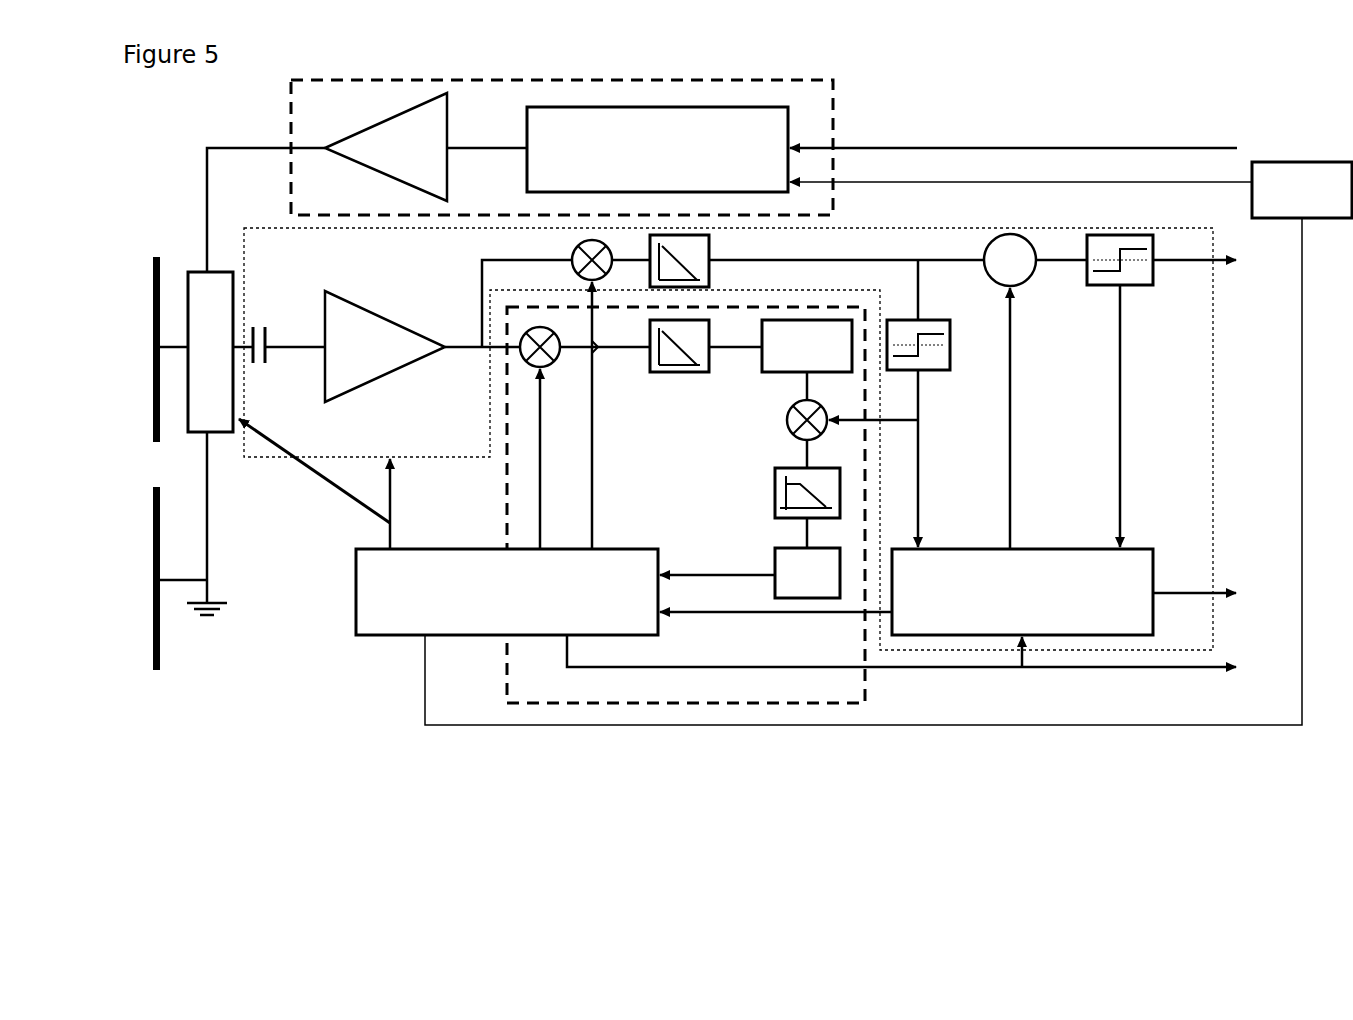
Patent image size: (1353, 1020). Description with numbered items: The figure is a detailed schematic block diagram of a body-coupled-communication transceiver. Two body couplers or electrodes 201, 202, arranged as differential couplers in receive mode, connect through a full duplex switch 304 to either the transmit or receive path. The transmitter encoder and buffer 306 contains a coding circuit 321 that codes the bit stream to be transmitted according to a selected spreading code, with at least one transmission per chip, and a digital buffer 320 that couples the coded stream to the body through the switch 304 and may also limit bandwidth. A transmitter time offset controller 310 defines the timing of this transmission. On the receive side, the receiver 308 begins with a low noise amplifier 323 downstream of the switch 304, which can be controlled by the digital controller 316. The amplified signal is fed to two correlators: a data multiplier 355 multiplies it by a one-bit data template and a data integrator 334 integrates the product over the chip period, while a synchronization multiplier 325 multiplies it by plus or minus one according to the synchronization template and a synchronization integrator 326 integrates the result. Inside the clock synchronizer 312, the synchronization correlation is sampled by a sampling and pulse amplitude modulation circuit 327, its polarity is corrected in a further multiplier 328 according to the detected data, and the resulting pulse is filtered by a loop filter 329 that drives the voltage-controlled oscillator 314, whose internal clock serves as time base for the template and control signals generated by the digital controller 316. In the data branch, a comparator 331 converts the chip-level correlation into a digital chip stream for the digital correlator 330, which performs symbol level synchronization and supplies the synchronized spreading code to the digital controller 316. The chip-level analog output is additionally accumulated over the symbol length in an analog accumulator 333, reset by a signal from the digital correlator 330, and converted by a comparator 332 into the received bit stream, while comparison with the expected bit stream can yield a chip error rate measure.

The body coupler 201 is at (153, 306).
The body coupler 202 is at (153, 541).
The full duplex switch 304 is at (195, 272).
The transmitter encoder and buffer 306 is at (623, 80).
The receiver 308 is at (1213, 402).
The transmitter time offset controller 310 is at (1275, 162).
The clock synchronizer 312 is at (865, 695).
The voltage-controlled oscillator 314 is at (775, 562).
The digital controller 316 is at (737, 474).
The digital buffer 320 is at (450, 98).
The coding circuit 321 is at (742, 107).
The low noise amplifier 323 is at (325, 307).
The synchronization multiplier 325 is at (520, 340).
The synchronization integrator 326 is at (660, 372).
The sampling and pulse amplitude modulation circuit 327 is at (745, 372).
The further multiplier 328 is at (787, 425).
The loop filter 329 is at (775, 498).
The digital correlator 330 is at (1064, 592).
The comparator 331 is at (930, 370).
The comparator 332 is at (1143, 285).
The analog accumulator 333 is at (1025, 283).
The data integrator 334 is at (712, 258).
The data multiplier 355 is at (572, 258).